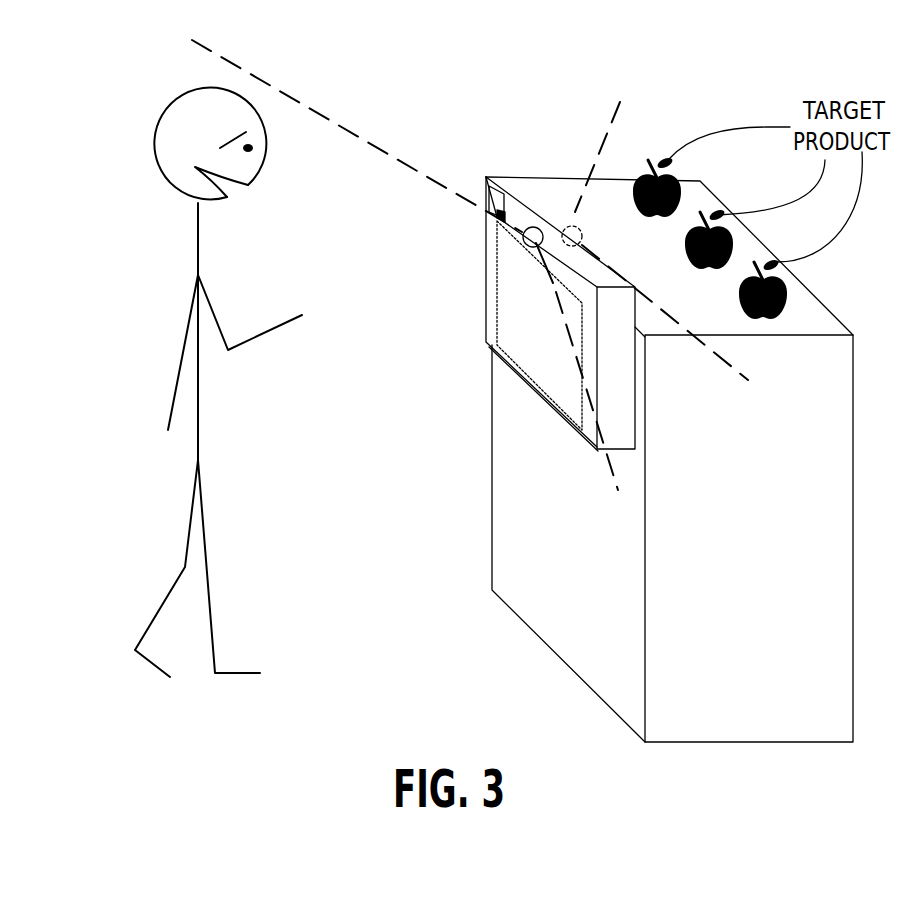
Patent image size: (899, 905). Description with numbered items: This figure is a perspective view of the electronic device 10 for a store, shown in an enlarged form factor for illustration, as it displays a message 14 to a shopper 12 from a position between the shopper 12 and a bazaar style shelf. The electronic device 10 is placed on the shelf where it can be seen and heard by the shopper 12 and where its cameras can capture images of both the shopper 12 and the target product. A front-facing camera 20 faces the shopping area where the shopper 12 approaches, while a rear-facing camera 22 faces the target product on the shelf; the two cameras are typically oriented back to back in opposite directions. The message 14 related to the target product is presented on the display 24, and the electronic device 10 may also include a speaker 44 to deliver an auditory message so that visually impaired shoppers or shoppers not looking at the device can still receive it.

The electronic device 10 is at (595, 447).
The shopper 12 is at (203, 122).
The message 14 is at (536, 362).
The front-facing camera 20 is at (533, 227).
The rear-facing camera 22 is at (569, 226).
The display 24 is at (487, 293).
The speaker 44 is at (490, 200).